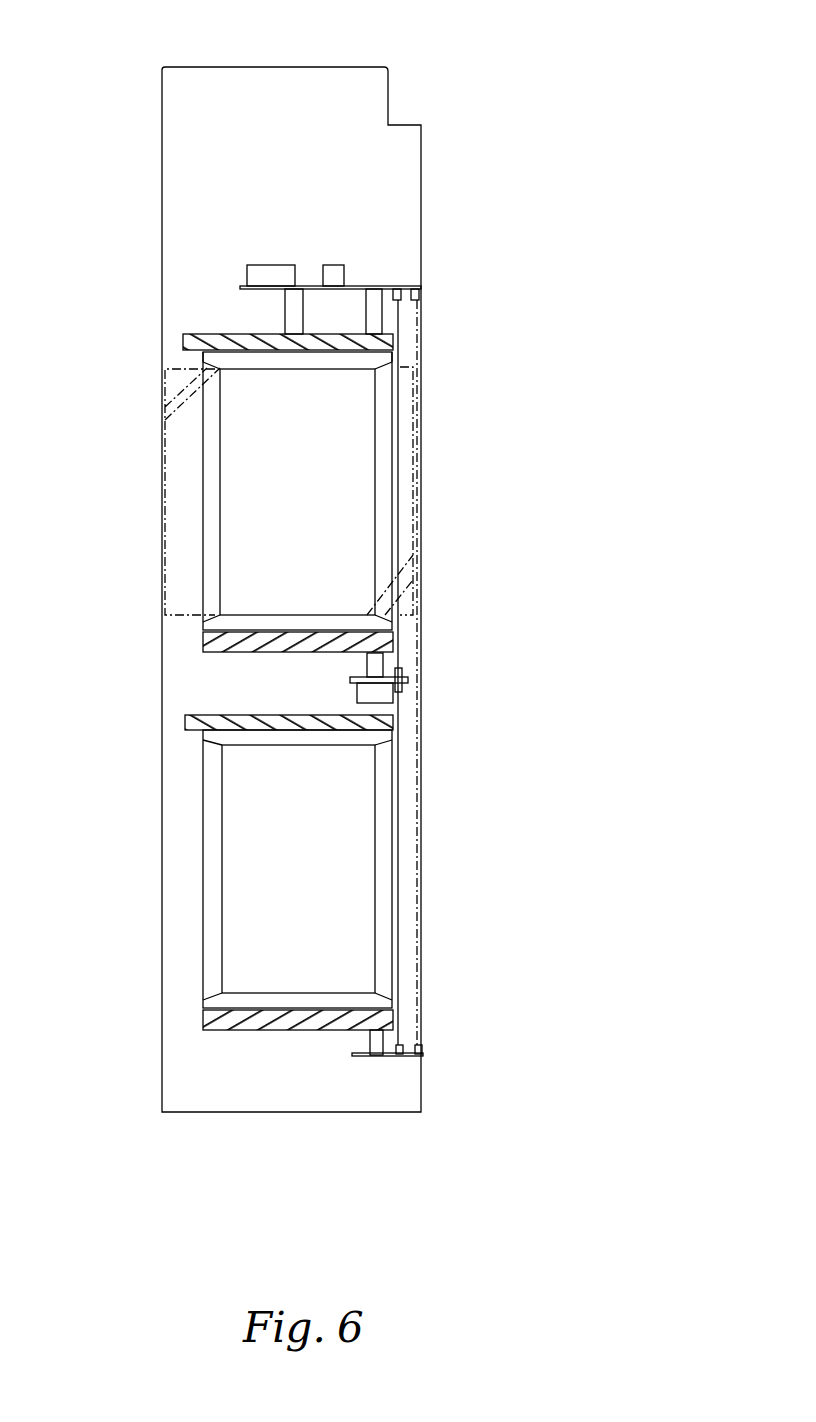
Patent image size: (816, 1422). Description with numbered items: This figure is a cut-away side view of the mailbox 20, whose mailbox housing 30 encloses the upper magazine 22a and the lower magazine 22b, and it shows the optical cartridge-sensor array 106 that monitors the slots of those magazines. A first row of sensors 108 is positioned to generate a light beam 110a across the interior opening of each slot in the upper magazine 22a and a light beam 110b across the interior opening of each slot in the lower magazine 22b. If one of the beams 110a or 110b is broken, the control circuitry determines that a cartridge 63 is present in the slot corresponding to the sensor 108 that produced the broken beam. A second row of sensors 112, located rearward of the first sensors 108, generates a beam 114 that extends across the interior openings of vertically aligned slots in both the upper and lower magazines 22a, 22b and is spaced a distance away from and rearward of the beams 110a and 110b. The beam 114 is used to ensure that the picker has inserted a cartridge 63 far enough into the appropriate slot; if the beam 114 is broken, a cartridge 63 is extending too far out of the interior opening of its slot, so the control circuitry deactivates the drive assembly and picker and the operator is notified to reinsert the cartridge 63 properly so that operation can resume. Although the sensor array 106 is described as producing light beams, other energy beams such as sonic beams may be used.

The mailbox 20 is at (343, 556).
The mailbox housing 30 is at (201, 77).
The upper magazine 22a is at (245, 431).
The lower magazine 22b is at (183, 800).
The cartridge 63 is at (182, 453).
The optical cartridge-sensor array 106 is at (514, 356).
The first row of sensors 108 is at (395, 1067).
The light beam 110a is at (405, 323).
The light beam 110b is at (400, 931).
The second row of sensors 112 is at (423, 1067).
The light beam 114 is at (415, 643).